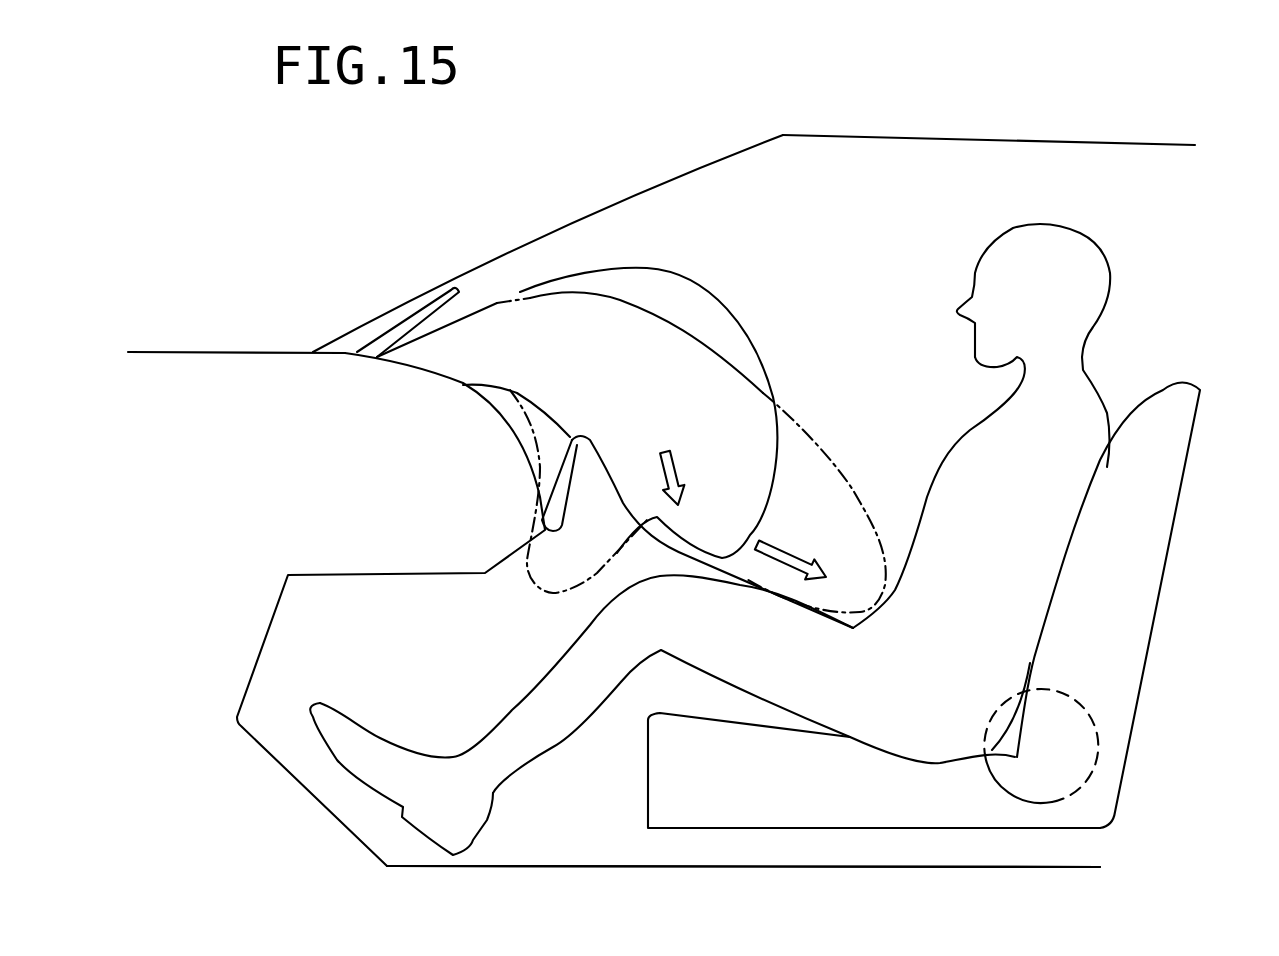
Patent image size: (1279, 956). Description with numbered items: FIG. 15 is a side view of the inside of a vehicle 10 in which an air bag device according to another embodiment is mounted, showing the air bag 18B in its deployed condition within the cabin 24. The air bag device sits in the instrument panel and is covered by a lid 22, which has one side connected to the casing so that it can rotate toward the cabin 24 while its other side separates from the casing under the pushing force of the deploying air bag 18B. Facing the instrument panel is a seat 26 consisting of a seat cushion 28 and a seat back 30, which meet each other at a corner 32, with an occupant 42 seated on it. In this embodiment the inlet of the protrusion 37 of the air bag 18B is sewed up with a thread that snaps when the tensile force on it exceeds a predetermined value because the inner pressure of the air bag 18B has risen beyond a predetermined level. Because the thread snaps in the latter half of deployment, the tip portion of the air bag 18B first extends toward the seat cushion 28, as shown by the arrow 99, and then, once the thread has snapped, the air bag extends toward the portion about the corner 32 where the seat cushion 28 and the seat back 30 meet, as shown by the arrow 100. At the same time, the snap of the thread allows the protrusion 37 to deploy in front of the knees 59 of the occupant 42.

The vehicle 10 is at (962, 105).
The air bag 18B is at (737, 282).
The lid 22 is at (460, 291).
The cabin 24 is at (903, 241).
The seat 26 is at (750, 852).
The seat cushion 28 is at (853, 808).
The seat back 30 is at (1143, 582).
The corner 32 is at (1099, 740).
The protrusion 37 is at (560, 531).
The occupant 42 is at (941, 688).
The knees 59 is at (693, 631).
The arrow 99 is at (680, 468).
The arrow 100 is at (805, 558).